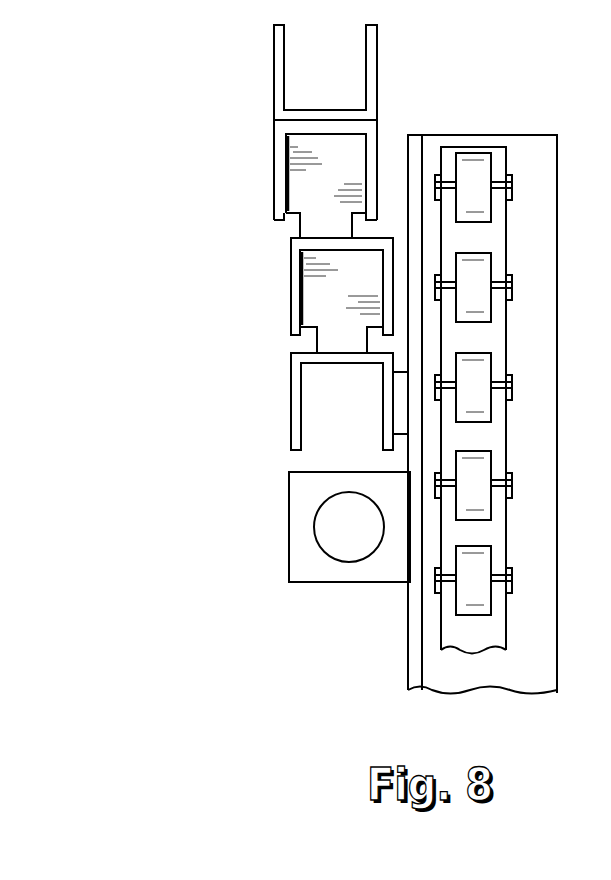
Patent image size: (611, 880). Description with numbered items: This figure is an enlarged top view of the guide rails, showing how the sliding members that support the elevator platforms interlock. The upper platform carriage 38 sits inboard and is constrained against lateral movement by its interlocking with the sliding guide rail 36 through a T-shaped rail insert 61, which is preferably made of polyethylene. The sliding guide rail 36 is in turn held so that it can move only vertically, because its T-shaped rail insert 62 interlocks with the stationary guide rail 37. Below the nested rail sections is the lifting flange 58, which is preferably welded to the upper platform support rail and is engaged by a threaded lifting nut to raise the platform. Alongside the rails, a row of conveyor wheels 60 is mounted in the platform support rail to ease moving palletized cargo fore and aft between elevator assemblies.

The sliding guide rail 36 is at (300, 242).
The stationary guide rail 37 is at (286, 132).
The upper platform carriage 38 is at (290, 403).
The lifting flange 58 is at (288, 535).
The conveyor wheels 60 is at (480, 550).
The T-shaped rail insert 61 is at (335, 315).
The T-shaped rail insert 62 is at (322, 192).